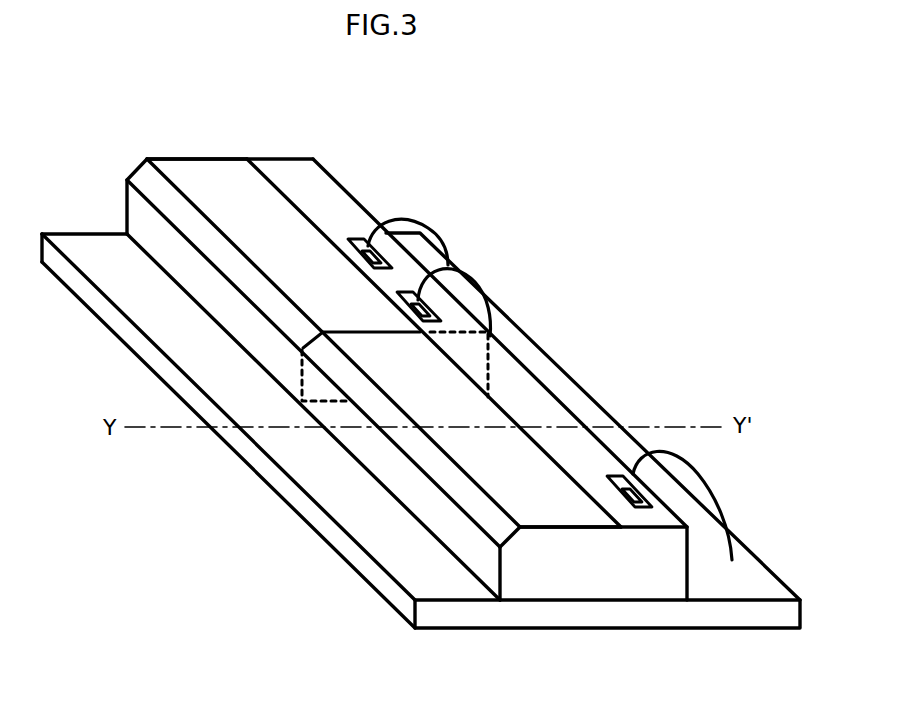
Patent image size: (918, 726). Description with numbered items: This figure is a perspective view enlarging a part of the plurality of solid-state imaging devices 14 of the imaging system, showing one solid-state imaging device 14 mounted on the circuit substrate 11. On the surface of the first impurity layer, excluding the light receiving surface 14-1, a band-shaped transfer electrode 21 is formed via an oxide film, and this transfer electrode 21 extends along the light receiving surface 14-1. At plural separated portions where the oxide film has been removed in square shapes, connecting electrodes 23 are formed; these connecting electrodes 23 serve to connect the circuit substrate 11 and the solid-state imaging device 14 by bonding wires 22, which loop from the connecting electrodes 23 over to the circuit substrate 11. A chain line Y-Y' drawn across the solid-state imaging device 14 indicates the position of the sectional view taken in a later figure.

The circuit substrate 11 is at (723, 613).
The solid-state imaging device 14 is at (358, 191).
The light receiving surface 14-1 is at (177, 205).
The transfer electrode 21 is at (223, 183).
The bonding wires 22 is at (413, 227).
The connecting electrodes 23 is at (406, 302).